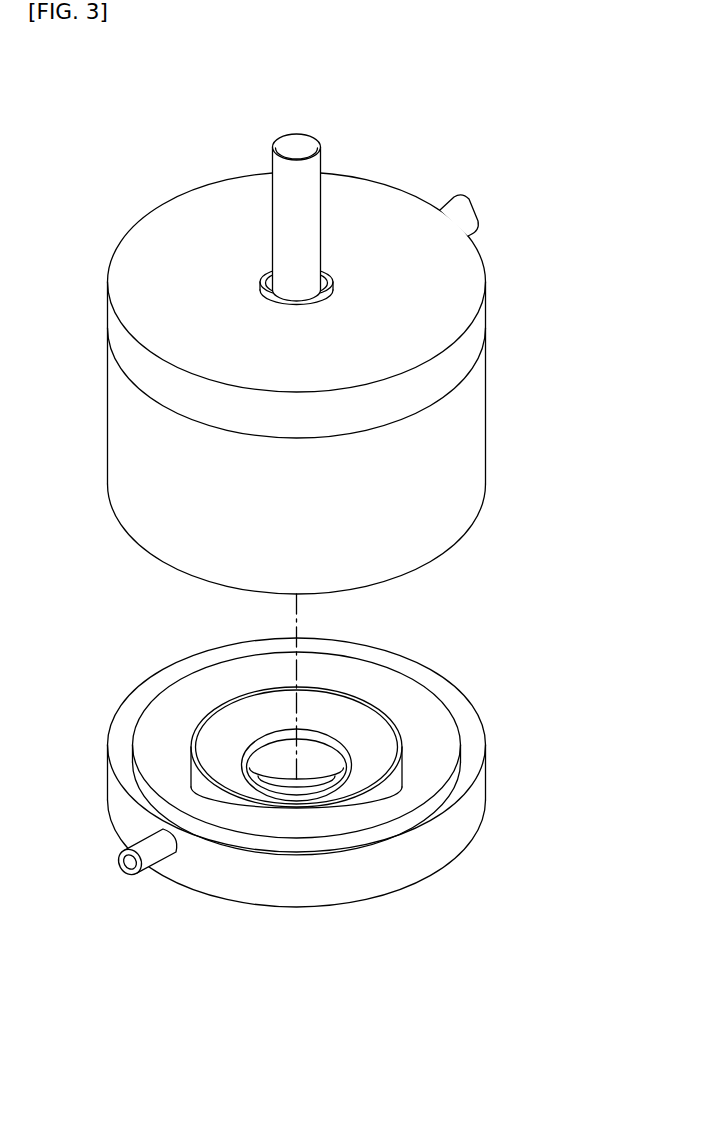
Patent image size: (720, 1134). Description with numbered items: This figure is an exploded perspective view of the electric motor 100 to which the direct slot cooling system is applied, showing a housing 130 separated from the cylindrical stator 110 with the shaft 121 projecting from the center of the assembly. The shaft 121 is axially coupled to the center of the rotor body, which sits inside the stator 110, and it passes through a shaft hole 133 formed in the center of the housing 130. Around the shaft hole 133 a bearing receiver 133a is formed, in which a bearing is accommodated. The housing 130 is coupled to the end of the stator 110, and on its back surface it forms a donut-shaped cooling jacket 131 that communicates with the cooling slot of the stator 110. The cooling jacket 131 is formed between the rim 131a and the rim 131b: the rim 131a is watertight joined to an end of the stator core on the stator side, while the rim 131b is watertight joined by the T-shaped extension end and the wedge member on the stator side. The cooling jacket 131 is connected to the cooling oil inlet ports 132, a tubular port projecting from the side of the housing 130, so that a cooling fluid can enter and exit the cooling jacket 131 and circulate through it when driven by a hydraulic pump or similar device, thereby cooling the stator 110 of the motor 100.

The pump apparatus 100 is at (316, 68).
The stator 110 is at (488, 431).
The shaft 121 is at (303, 143).
The housing 130 is at (488, 311).
The cooling jacket 131 is at (428, 756).
The second rim 131a is at (376, 651).
The second rim 131b is at (391, 713).
The cooling oil inlet port 132 is at (468, 213).
The shaft hole 133 is at (327, 268).
The bearing receiver 133a is at (257, 747).